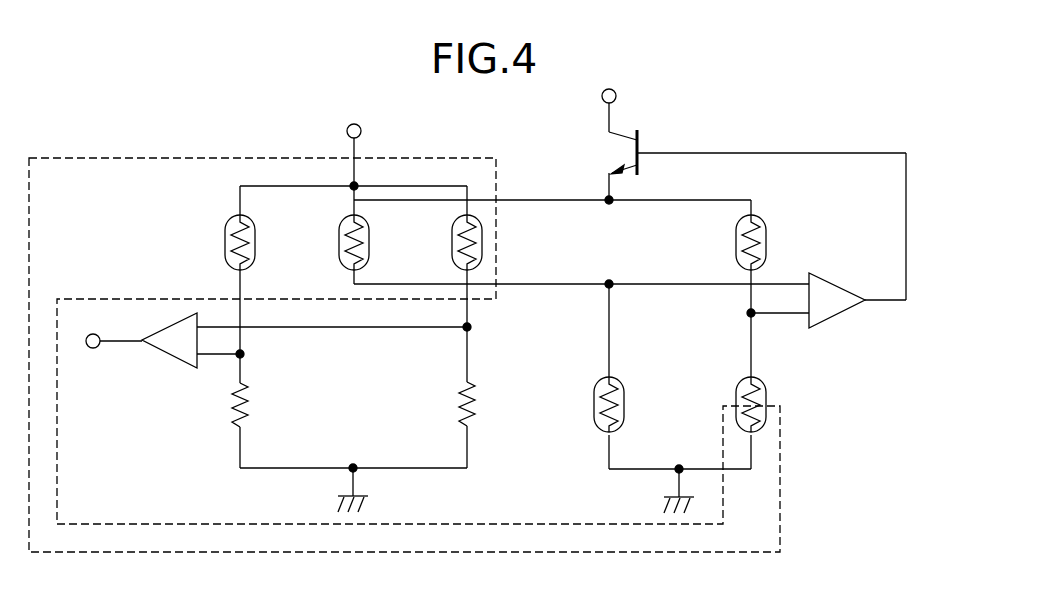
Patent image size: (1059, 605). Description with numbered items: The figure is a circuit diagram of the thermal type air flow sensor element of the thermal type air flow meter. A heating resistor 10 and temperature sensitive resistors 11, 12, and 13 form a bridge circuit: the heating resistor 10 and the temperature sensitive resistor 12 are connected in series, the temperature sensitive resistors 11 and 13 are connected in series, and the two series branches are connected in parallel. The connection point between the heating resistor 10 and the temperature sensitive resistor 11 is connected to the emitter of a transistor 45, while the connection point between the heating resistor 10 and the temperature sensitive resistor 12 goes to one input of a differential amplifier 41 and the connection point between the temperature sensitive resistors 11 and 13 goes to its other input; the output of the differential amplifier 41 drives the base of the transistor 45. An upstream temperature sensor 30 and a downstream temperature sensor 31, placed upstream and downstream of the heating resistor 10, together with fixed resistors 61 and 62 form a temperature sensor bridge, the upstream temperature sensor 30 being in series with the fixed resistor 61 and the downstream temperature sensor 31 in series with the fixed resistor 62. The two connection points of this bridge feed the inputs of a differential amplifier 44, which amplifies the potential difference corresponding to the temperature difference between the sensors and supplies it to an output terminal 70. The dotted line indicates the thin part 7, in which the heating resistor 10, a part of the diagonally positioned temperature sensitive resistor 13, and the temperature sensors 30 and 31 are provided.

The thin part 7 is at (77, 156).
The upstream temperature sensor 30 is at (224, 243).
The heating resistor 10 is at (338, 243).
The downstream temperature sensor 31 is at (452, 243).
The temperature sensitive resistor 11 is at (736, 243).
The temperature sensitive resistor 12 is at (594, 404).
The temperature sensitive resistor 13 is at (736, 392).
The fixed resistor 61 is at (252, 405).
The fixed resistor 62 is at (455, 413).
The differential amplifier 41 is at (838, 318).
The differential amplifier 44 is at (177, 362).
The transistor 45 is at (605, 151).
The output terminal 70 is at (93, 349).